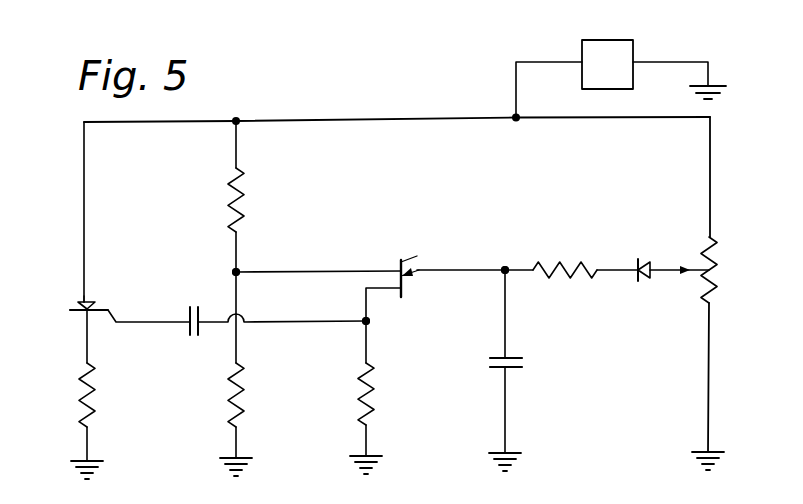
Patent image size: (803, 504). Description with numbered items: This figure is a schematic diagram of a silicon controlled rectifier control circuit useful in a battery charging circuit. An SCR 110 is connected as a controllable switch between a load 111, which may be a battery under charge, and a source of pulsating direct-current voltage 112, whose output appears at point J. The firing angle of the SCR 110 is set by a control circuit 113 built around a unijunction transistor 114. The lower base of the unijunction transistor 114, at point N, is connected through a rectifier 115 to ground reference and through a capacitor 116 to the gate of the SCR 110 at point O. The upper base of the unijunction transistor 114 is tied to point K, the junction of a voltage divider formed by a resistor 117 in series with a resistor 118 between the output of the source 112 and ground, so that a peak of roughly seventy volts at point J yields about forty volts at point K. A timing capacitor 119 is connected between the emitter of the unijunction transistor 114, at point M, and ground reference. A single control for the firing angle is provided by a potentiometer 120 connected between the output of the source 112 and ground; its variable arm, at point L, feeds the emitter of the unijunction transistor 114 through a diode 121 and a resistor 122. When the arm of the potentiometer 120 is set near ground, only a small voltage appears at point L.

The SCR 110 is at (79, 305).
The load 111 is at (95, 401).
The source of pulsating direct-current voltage 112 is at (600, 40).
The control circuit 113 is at (436, 192).
The unijunction transistor 114 is at (417, 256).
The rectifier 115 is at (372, 376).
The capacitor 116 is at (202, 304).
The resistor 117 is at (244, 204).
The resistor 118 is at (244, 401).
The timing capacitor 119 is at (519, 355).
The potentiometer 120 is at (724, 272).
The diode 121 is at (639, 282).
The resistor 122 is at (548, 259).
The point J is at (516, 119).
The point K is at (238, 271).
The point L is at (714, 256).
The point M is at (505, 269).
The point N is at (368, 322).
The point O is at (85, 333).